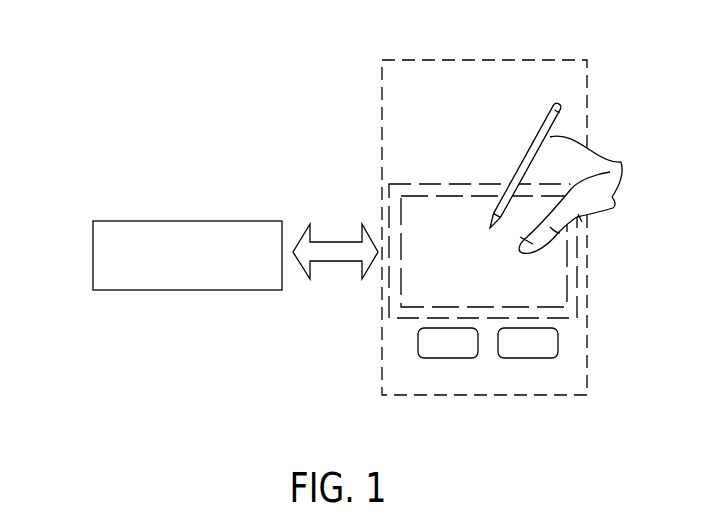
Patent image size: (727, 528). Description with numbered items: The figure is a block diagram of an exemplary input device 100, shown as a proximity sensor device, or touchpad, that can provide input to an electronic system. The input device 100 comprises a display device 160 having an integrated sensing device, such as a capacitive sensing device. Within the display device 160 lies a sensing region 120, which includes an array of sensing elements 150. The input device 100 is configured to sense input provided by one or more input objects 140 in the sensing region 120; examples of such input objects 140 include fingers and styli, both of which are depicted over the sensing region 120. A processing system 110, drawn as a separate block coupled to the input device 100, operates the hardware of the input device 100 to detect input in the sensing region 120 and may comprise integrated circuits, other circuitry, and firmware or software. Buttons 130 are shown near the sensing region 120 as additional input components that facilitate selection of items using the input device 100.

The input device 100 is at (330, 88).
The processing system 110 is at (93, 250).
The sensing region 120 is at (578, 267).
The buttons 130 is at (453, 358).
The input objects 140 is at (620, 166).
The array of sensing elements 150 is at (440, 196).
The display device 160 is at (587, 86).